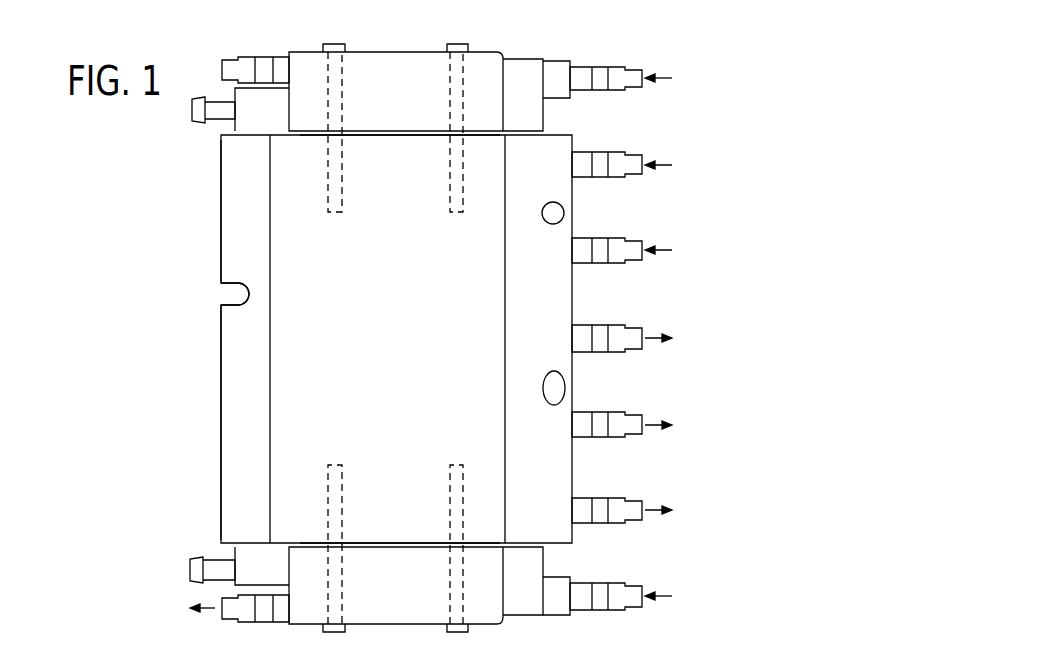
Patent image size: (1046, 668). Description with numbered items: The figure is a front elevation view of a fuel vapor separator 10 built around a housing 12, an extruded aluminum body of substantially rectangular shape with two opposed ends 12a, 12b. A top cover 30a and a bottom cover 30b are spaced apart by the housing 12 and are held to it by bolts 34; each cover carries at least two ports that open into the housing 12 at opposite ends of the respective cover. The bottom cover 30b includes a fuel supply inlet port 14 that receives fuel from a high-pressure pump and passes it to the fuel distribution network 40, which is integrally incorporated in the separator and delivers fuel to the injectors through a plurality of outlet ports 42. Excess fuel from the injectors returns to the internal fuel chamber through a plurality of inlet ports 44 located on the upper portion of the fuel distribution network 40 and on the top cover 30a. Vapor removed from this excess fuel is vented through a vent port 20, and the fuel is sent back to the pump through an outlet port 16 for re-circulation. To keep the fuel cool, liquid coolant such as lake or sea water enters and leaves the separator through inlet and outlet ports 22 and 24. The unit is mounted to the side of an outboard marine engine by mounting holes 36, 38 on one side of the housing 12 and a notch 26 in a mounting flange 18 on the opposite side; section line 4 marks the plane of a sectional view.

The fuel vapor separator 10 is at (690, 60).
The housing 12 is at (402, 323).
The opposed end of housing 12a is at (428, 136).
The opposed end of housing 12b is at (428, 543).
The fuel supply inlet port 14 is at (634, 603).
The outlet port 16 is at (230, 612).
The mounting flange 18 is at (249, 398).
The vent port 20 is at (222, 70).
The coolant inlet port 22 is at (190, 569).
The coolant outlet port 24 is at (195, 110).
The notch 26 is at (232, 286).
The top cover 30a is at (386, 86).
The bottom cover 30b is at (402, 590).
The bolts 34 is at (334, 44).
The mounting hole 36 is at (556, 385).
The mounting hole 38 is at (557, 209).
The fuel distribution network 40 is at (534, 52).
The outlet ports 42 is at (645, 352).
The inlet ports 44 is at (645, 88).
The section line 4- 4 is at (163, 330).